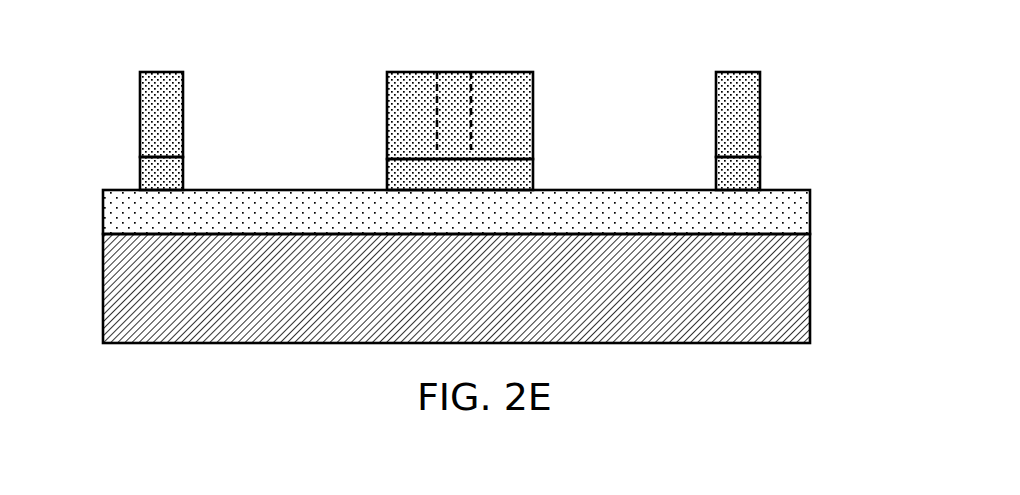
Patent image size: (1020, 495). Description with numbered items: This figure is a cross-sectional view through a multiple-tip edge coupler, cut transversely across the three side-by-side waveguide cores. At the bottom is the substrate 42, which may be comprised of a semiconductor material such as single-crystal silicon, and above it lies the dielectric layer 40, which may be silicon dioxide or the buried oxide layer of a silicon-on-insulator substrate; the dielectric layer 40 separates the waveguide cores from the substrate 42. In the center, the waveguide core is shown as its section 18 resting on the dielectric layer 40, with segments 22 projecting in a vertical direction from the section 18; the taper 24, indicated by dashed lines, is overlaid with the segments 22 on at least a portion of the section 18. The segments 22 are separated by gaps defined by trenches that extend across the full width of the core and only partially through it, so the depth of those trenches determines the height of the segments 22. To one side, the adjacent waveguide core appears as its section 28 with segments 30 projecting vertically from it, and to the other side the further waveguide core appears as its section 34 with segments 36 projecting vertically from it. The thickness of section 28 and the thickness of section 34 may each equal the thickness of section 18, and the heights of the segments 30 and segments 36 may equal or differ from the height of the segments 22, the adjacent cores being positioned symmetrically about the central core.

The section 18 is at (478, 176).
The segments 22 is at (418, 106).
The taper 24 is at (455, 144).
The section 28 is at (148, 170).
The segments 30 is at (148, 106).
The section 34 is at (740, 172).
The segments 36 is at (738, 110).
The dielectric layer 40 is at (775, 213).
The substrate 42 is at (135, 290).